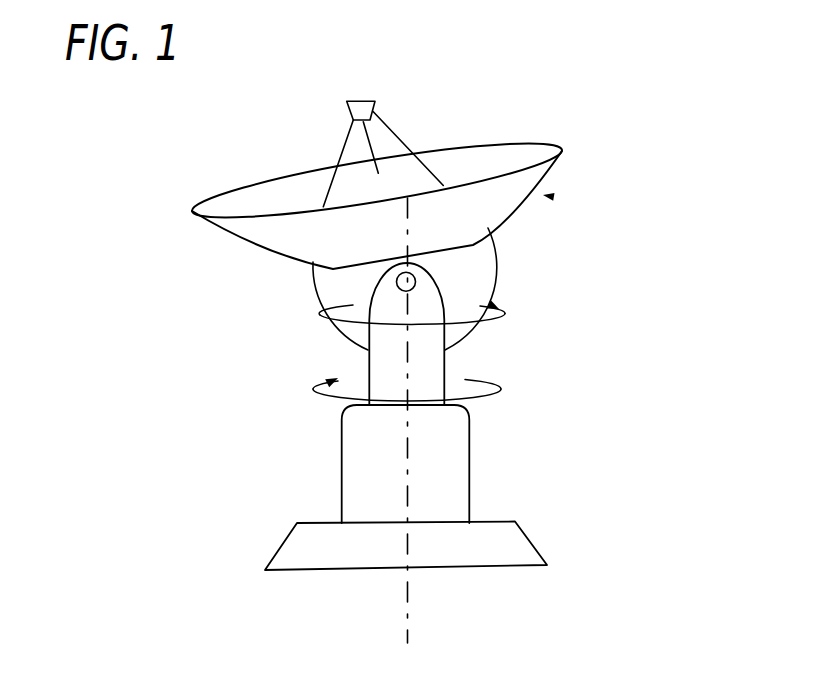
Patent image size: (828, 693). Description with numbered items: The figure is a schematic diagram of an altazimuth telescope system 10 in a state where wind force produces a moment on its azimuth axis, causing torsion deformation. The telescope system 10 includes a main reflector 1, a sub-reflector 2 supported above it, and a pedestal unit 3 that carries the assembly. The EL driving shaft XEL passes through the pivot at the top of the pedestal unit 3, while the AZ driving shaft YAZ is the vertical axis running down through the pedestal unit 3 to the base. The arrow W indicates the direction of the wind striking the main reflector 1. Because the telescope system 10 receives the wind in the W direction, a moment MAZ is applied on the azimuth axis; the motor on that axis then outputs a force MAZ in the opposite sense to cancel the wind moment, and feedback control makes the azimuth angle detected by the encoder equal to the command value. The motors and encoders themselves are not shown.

The main reflector 1 is at (232, 202).
The sub-reflector 2 is at (365, 100).
The pedestal unit 3 is at (215, 265).
The telescope system 10 is at (593, 468).
The direction of the wind W is at (554, 197).
The EL driving shaft XEL is at (396, 281).
The moment on the AZ axis MAZ is at (435, 349).
The AZ driving shaft YAZ is at (408, 500).